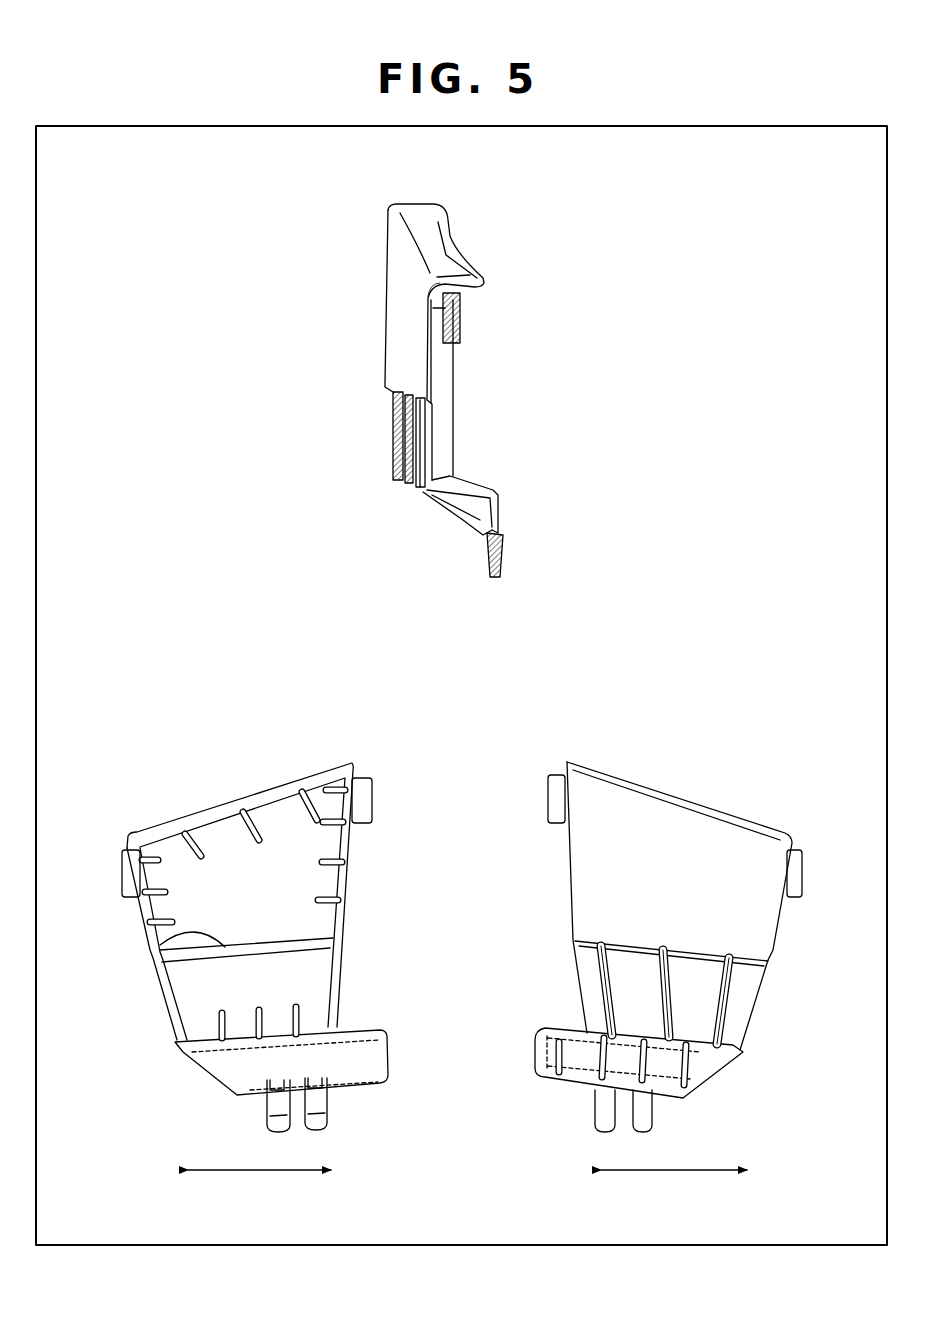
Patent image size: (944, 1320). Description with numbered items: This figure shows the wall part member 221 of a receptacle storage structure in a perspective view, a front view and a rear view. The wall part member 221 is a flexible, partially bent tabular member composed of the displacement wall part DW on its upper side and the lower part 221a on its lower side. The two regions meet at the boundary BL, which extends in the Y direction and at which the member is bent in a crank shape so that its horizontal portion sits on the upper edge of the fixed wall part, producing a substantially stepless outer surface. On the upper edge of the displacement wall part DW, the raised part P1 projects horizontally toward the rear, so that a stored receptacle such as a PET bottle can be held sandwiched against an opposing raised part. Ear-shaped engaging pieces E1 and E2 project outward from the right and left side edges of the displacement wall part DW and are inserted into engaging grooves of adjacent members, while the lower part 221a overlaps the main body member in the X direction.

The wall part member 221 is at (360, 211).
The lower part 221a is at (403, 450).
The raised part P1 is at (450, 252).
The displacement wall part DW is at (398, 303).
The engaging piece E1 is at (362, 778).
The engaging piece E2 is at (458, 315).
The boundary BL is at (160, 945).